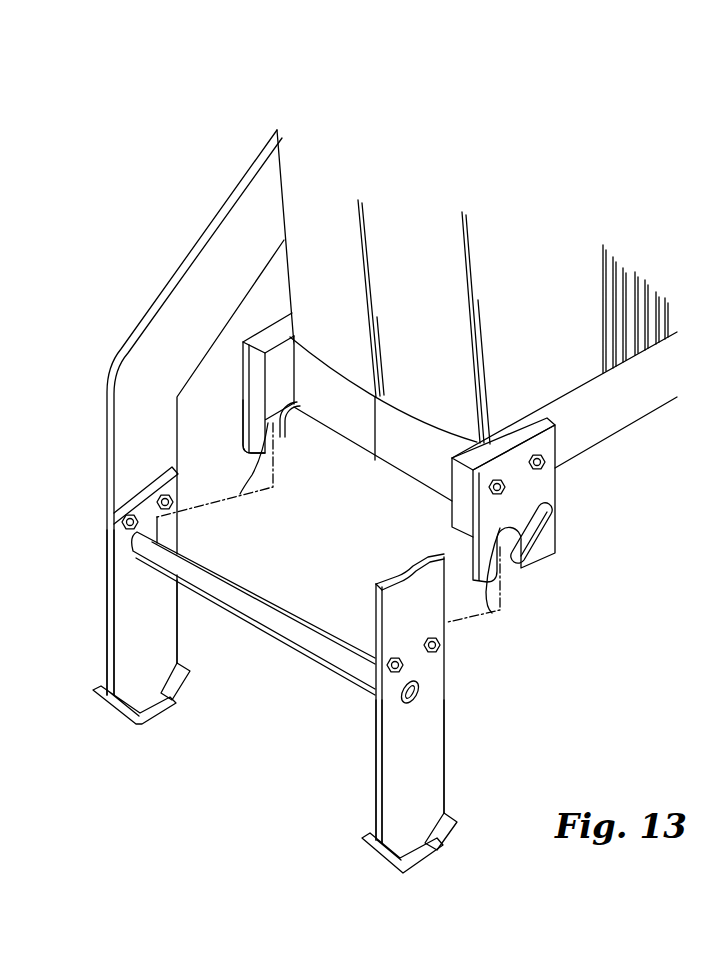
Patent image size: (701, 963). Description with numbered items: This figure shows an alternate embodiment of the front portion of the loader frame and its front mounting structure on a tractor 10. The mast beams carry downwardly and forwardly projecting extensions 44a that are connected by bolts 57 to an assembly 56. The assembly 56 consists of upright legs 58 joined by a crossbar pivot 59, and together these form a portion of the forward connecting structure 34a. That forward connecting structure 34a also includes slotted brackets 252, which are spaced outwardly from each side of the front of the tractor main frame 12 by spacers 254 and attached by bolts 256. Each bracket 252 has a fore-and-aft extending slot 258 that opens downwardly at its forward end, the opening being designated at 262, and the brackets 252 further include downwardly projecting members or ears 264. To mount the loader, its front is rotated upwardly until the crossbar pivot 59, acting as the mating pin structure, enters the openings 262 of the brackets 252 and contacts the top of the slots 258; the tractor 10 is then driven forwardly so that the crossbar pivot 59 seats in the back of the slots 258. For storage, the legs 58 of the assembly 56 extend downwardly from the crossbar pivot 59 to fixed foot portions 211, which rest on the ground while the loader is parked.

The tractor 10 is at (540, 268).
The main frame 12 is at (630, 413).
The forward connecting structure 34a is at (590, 523).
The mast beam extensions 44a is at (123, 427).
The assembly 56 is at (466, 720).
The bolts 57 is at (172, 478).
The upright legs 58 is at (163, 624).
The crossbar pivot 59 is at (243, 585).
The fixed foot portions 211 is at (161, 712).
The slotted brackets 252 is at (268, 327).
The spacers 254 is at (257, 394).
The bolts 256 is at (499, 479).
The slots 258 is at (278, 420).
The openings 262 is at (508, 566).
The ears 264 is at (243, 493).